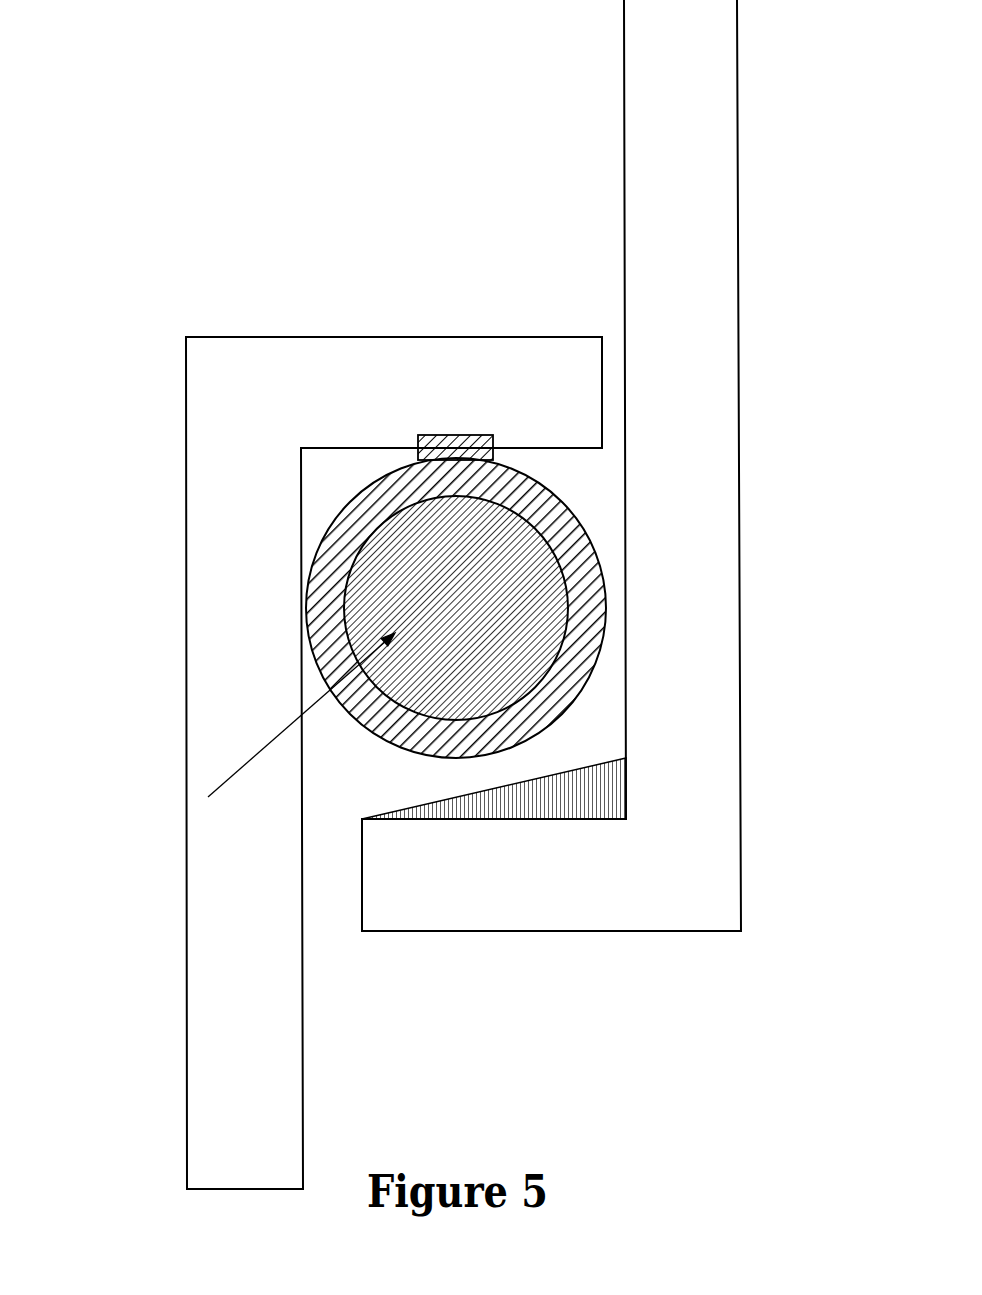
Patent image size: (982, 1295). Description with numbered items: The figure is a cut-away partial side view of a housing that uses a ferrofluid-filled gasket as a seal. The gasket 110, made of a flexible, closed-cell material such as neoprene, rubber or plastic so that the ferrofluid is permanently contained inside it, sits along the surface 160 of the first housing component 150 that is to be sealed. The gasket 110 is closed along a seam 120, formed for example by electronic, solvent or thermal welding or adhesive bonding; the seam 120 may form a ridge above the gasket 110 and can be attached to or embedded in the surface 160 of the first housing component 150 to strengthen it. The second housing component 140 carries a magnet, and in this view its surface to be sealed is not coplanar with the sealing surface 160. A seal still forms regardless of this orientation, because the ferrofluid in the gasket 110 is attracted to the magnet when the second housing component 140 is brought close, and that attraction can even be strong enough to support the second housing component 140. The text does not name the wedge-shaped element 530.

The gasket 110 is at (603, 520).
The seam 120 is at (438, 418).
The second housing component 140 is at (729, 760).
The first housing component 150 is at (218, 588).
The surface 160 is at (348, 435).
The wedge 530 is at (467, 833).